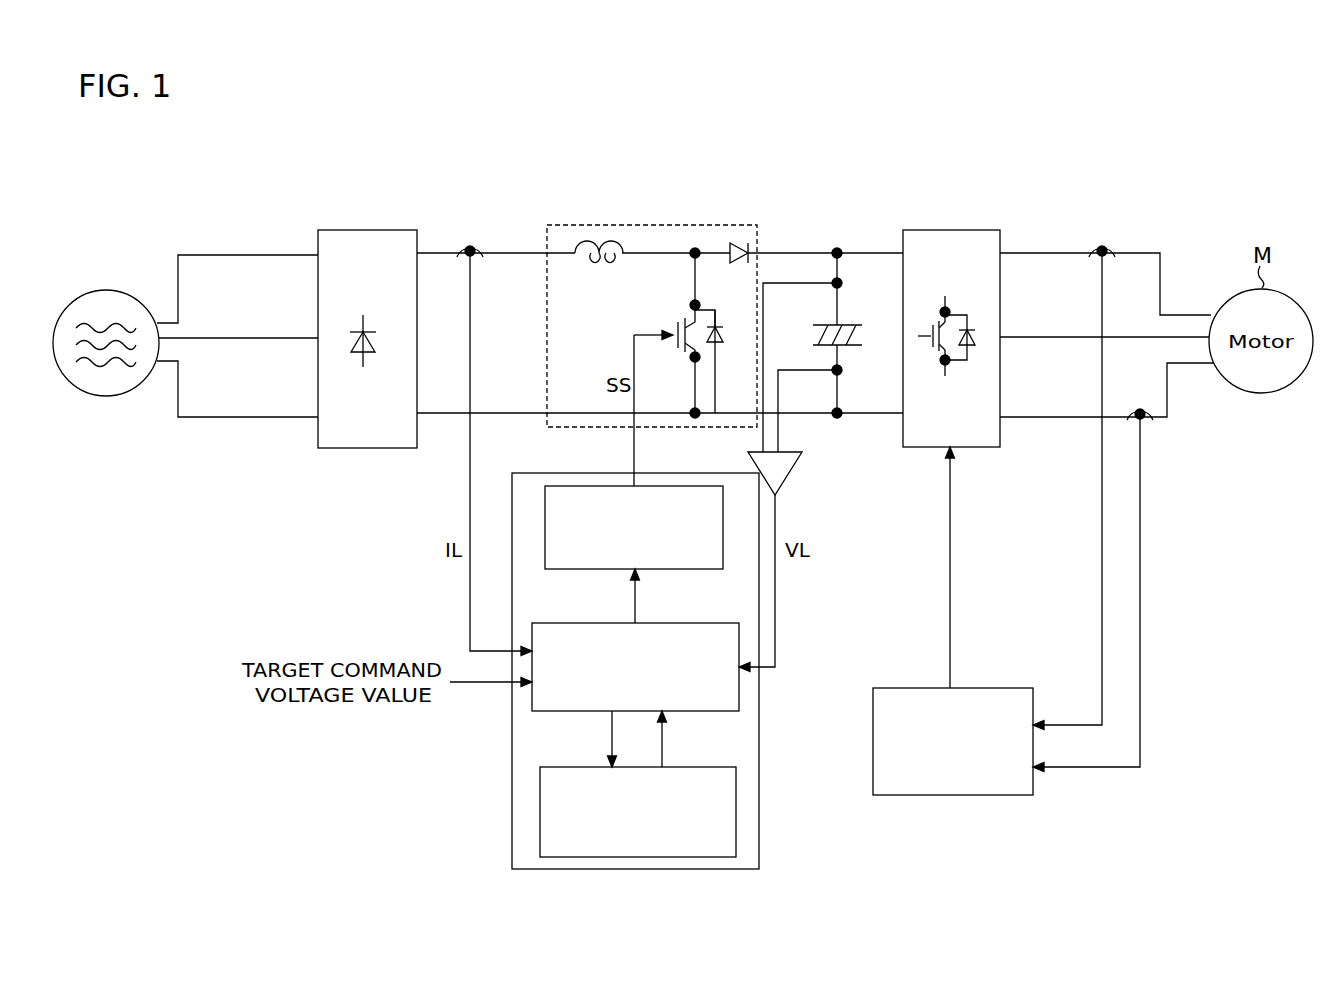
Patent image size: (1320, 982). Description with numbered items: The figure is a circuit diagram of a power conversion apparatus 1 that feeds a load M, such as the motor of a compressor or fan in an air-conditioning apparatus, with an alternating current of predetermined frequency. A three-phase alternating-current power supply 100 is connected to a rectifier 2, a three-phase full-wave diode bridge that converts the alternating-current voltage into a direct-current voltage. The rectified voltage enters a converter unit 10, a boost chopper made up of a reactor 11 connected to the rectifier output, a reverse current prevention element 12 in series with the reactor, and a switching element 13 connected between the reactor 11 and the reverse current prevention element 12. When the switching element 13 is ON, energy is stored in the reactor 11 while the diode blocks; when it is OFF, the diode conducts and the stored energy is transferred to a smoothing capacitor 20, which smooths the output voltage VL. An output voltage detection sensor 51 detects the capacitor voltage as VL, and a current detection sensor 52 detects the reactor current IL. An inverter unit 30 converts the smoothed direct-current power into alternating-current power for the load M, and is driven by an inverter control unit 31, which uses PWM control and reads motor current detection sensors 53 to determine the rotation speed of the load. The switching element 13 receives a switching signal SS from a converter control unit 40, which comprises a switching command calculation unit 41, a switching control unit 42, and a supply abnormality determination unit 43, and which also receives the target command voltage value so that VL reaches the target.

The power conversion apparatus 1 is at (790, 195).
The rectifier 2 is at (383, 449).
The converter unit 10 is at (547, 325).
The reactor 11 is at (601, 235).
The reverse current prevention element 12 is at (740, 236).
The switching element 13 is at (672, 328).
The smoothing capacitor 20 is at (845, 324).
The inverter unit 30 is at (948, 229).
The inverter control unit 31 is at (1007, 687).
The converter control unit 40 is at (759, 758).
The switching command calculation unit 41 is at (703, 623).
The switching control unit 42 is at (703, 486).
The supply abnormality determination unit 43 is at (705, 766).
The output voltage detection sensor 51 is at (790, 478).
The current detection sensor 52 is at (468, 234).
The motor current detection sensors 53 is at (1100, 237).
The three-phase alternating-current power supply 100 is at (104, 289).